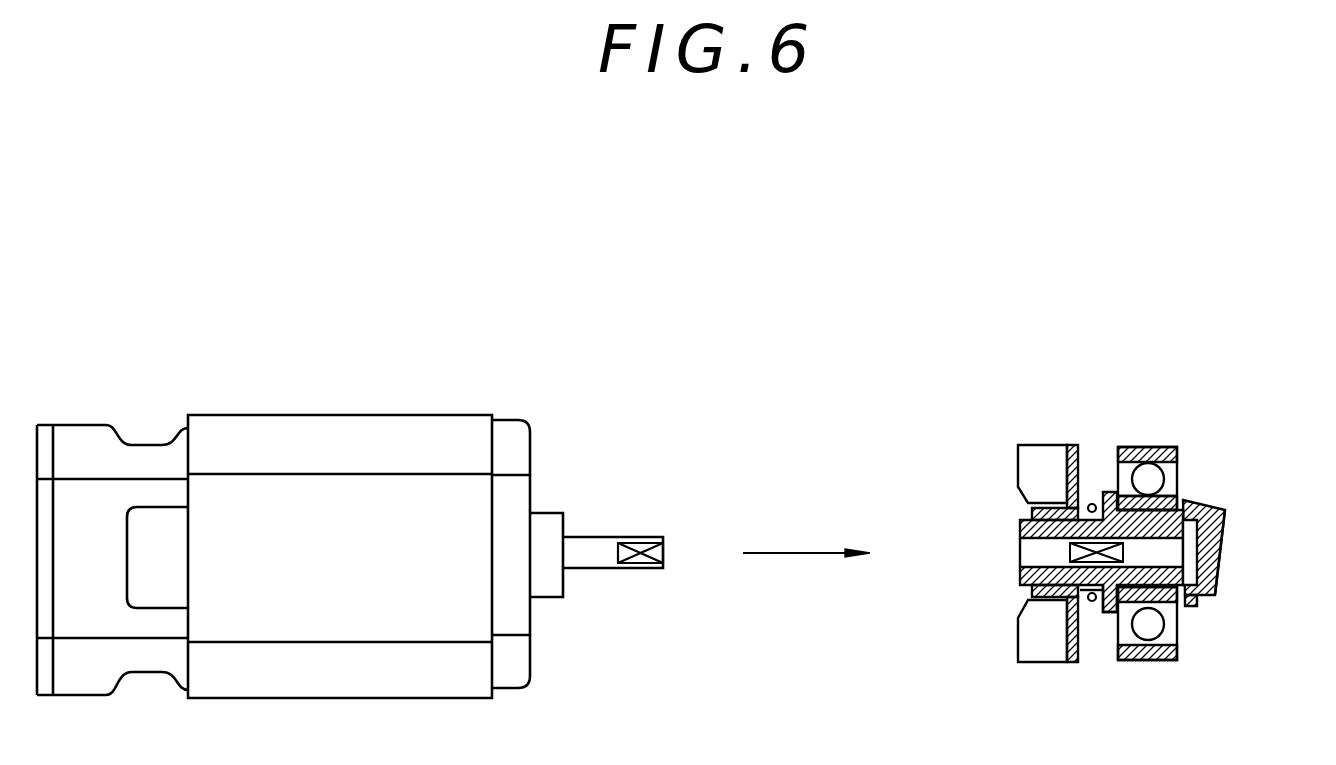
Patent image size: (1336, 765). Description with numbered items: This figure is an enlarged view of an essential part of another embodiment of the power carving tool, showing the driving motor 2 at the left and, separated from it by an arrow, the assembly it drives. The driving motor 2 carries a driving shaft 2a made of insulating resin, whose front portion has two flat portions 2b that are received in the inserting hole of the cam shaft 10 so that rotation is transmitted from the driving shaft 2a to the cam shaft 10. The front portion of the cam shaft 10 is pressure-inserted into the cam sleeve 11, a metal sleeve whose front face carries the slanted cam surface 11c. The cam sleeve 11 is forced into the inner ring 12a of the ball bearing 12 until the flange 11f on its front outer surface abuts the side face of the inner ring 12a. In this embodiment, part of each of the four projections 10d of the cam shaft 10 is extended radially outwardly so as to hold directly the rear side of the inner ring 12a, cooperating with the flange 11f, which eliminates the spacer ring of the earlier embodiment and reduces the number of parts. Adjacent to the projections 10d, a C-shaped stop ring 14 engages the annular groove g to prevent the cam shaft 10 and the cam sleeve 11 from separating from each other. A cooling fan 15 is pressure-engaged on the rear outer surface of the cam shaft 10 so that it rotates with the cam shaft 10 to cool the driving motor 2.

The driving motor 2 is at (343, 432).
The driving shaft 2a is at (587, 540).
The flat portion 2b is at (668, 540).
The cam shaft 10 is at (1020, 578).
The projection 10d is at (1110, 613).
The cam sleeve 11 is at (1225, 523).
The slanted cam surface 11c is at (1217, 567).
The flange 11f is at (1185, 607).
The ball bearing 12 is at (1172, 455).
The inner ring 12a is at (1185, 500).
The C-shaped stop ring 14 is at (1088, 500).
The cooling fan 15 is at (1043, 457).
The annular groove g is at (1087, 592).